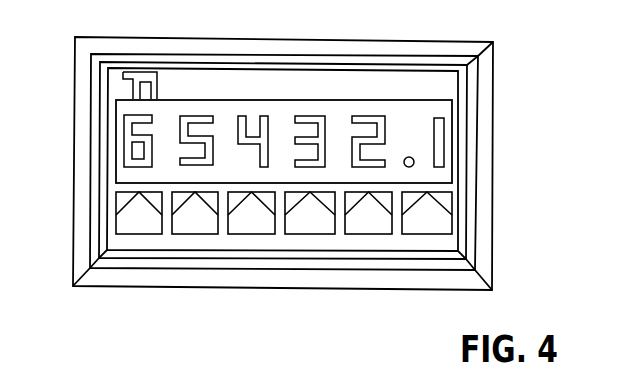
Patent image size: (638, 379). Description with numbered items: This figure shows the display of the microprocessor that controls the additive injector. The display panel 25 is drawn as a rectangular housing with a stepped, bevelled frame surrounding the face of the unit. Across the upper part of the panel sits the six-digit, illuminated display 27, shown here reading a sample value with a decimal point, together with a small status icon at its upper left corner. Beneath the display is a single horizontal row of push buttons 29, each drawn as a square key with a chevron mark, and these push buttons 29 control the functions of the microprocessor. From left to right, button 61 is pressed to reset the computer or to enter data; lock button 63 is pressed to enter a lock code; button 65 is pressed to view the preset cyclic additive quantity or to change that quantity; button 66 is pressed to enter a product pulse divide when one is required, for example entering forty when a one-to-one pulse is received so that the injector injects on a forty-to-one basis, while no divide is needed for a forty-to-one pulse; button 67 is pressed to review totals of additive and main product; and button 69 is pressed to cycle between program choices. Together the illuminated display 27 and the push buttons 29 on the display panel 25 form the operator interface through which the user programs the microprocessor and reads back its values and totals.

The display panel 25 is at (74, 240).
The illuminated display 27 is at (236, 100).
The push buttons 29 is at (452, 202).
The button 61 is at (116, 200).
The lock button 63 is at (180, 234).
The button 65 is at (269, 234).
The button 66 is at (328, 234).
The button 67 is at (375, 234).
The button 69 is at (452, 222).